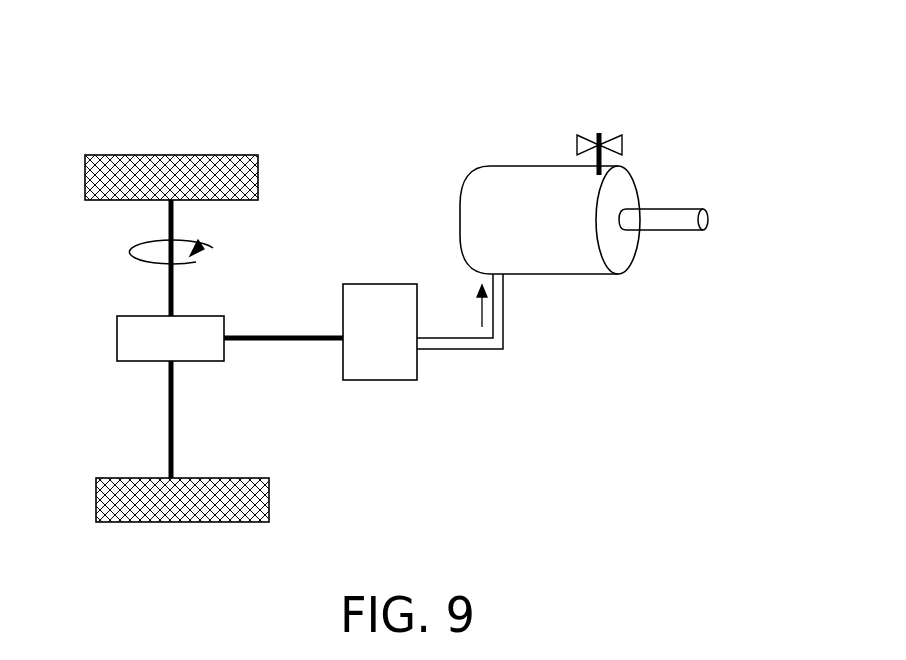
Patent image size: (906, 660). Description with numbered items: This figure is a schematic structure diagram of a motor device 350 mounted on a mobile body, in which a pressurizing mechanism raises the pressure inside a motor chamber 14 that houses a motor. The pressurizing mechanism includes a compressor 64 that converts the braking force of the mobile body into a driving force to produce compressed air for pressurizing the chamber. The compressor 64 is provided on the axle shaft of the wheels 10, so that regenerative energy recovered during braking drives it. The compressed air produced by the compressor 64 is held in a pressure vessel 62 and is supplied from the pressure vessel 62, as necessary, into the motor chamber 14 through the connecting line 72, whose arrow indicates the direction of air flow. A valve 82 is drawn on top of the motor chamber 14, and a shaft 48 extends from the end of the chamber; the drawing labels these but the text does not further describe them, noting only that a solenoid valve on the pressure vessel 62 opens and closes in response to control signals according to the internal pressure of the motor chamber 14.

The motor device 350 is at (407, 102).
The wheels 10 is at (203, 155).
The compressor 64 is at (117, 349).
The pressure vessel 62 is at (405, 380).
The fluid conduit 72 is at (503, 330).
The motor chamber 14 is at (503, 166).
The valve 82 is at (622, 145).
The output shaft 48 is at (686, 231).